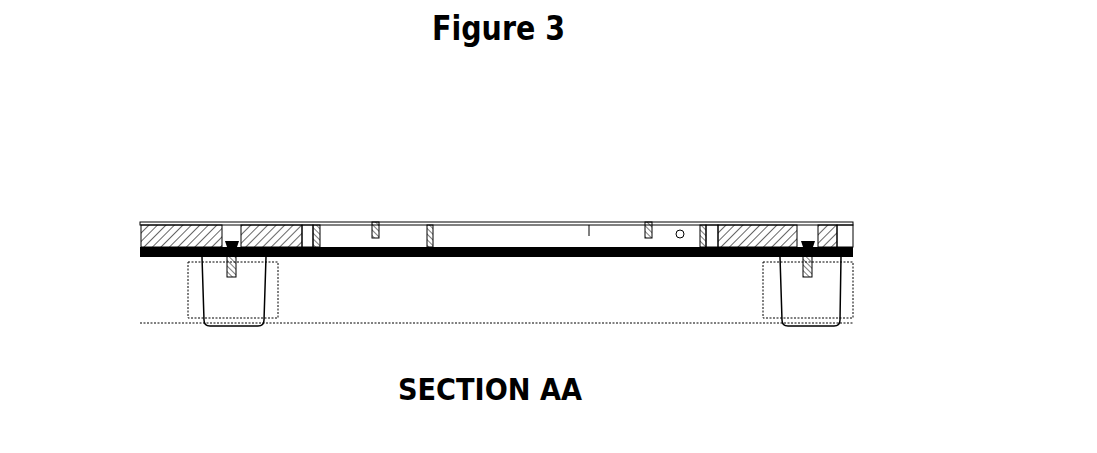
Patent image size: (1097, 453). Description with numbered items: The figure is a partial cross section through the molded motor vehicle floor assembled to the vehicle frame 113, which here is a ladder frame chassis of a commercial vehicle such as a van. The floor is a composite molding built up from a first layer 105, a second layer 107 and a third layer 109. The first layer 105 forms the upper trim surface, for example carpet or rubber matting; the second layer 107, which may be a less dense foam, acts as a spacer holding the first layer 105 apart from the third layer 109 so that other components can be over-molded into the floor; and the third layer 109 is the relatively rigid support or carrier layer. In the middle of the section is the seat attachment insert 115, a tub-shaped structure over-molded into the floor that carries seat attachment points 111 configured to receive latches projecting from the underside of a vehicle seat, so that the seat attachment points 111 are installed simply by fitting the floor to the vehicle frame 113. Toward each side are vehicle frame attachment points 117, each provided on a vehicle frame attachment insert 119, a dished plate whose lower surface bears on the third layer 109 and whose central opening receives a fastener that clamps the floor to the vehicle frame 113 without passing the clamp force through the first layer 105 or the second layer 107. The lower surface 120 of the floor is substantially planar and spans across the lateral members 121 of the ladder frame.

The first layer 105 is at (173, 222).
The second layer 107 is at (840, 238).
The third layer 109 is at (140, 250).
The seat attachment point 111 is at (375, 225).
The vehicle frame 113 is at (650, 295).
The seat attachment insert 115 is at (500, 240).
The vehicle frame attachment point 117 is at (224, 204).
The vehicle frame attachment insert 119 is at (270, 225).
The lower surface 120 is at (178, 257).
The lateral member 121 is at (230, 322).